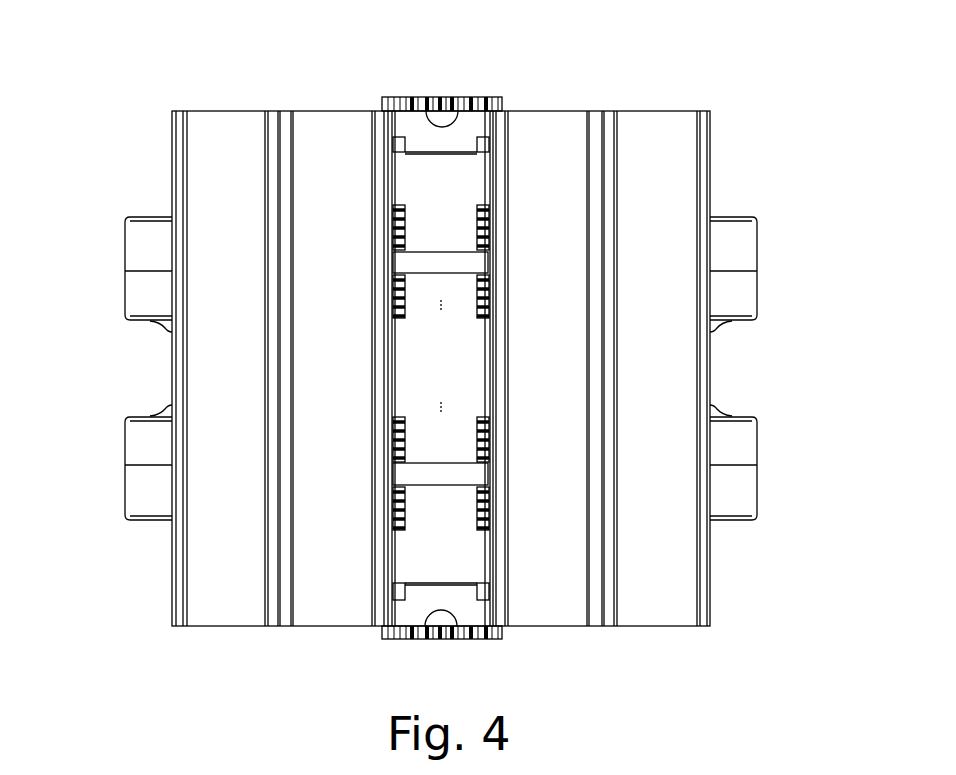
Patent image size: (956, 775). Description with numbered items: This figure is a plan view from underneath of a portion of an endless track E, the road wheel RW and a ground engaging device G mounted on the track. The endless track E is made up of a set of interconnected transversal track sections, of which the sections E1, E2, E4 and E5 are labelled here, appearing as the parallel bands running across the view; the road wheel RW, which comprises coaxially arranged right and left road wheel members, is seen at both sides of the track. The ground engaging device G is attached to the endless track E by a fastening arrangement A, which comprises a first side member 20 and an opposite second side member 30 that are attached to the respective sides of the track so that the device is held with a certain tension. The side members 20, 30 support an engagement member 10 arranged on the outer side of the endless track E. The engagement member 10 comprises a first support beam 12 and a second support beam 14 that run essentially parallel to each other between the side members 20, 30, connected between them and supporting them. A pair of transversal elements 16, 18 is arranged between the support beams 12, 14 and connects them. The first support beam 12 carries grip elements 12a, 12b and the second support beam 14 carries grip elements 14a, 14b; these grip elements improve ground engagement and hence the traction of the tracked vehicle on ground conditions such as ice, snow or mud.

The endless track E is at (170, 373).
The track section E1 is at (641, 106).
The track section E2 is at (541, 106).
The track section E4 is at (346, 106).
The track section E5 is at (233, 106).
The engagement member 10 is at (496, 187).
The first support beam 12 is at (486, 567).
The grip element 12a is at (475, 301).
The grip element 12b is at (469, 443).
The second support beam 14 is at (398, 381).
The grip element 14a is at (407, 237).
The grip element 14b is at (408, 447).
The transversal element 16 is at (457, 279).
The transversal element 18 is at (443, 490).
The first side member 20 is at (410, 96).
The second side member 30 is at (399, 642).
The fastening arrangement A is at (441, 95).
The ground engaging device G is at (471, 95).
The road wheel RW is at (739, 411).